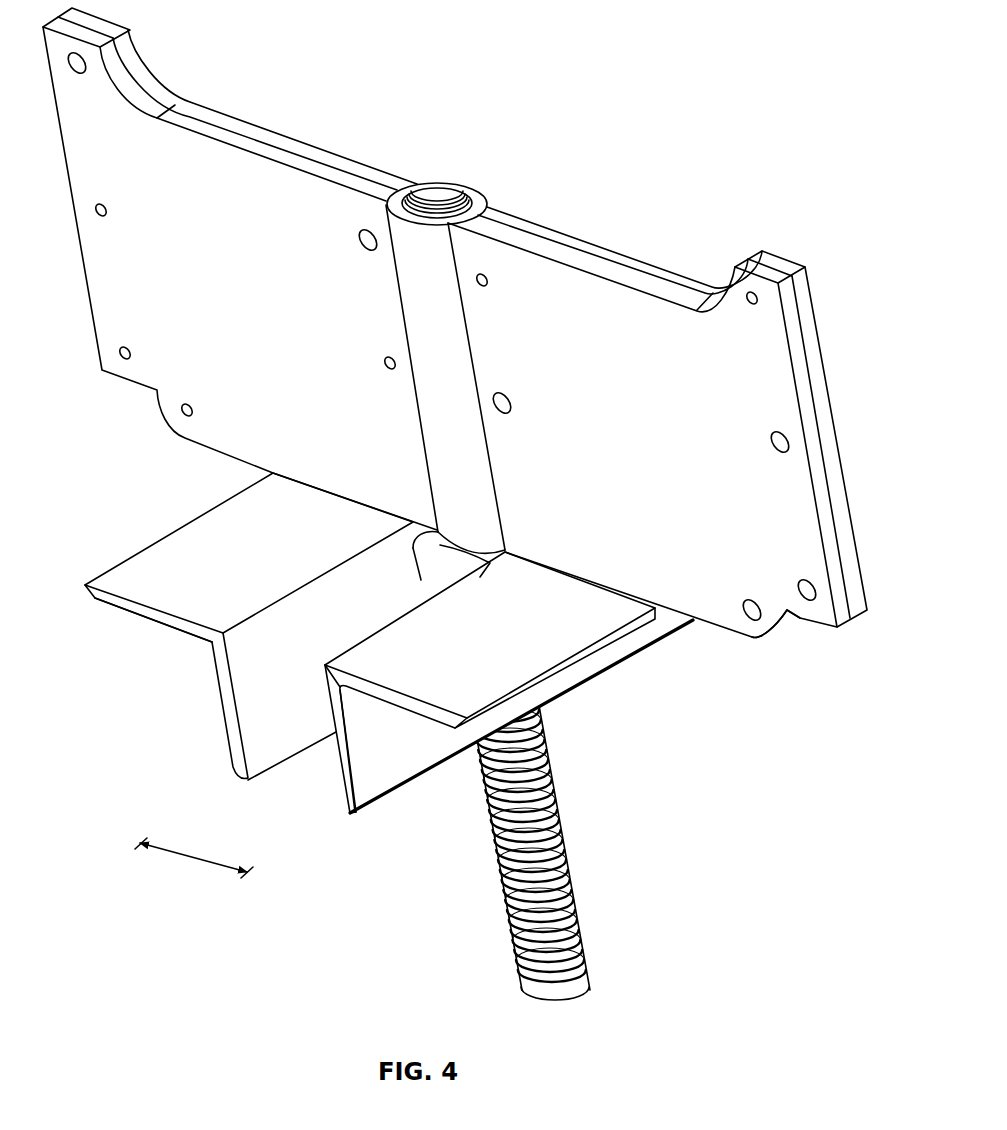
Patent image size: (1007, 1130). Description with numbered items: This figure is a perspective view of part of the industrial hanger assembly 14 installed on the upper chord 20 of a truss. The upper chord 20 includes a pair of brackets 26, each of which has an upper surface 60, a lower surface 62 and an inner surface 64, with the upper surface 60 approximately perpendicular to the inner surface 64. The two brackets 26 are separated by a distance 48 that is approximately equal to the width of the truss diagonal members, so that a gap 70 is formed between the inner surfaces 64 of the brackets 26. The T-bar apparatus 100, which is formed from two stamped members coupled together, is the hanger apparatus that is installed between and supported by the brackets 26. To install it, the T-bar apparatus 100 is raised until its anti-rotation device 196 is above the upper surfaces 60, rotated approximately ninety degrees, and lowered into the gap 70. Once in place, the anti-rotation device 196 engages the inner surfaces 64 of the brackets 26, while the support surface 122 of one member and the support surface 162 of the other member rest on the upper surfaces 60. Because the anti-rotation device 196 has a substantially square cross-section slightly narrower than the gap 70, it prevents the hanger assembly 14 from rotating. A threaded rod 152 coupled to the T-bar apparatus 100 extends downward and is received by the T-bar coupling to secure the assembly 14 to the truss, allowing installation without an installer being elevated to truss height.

The industrial hanger assembly 14 is at (704, 196).
The upper chord 20 is at (320, 900).
The brackets 26 is at (142, 618).
The distance 48 is at (192, 858).
The upper surface 60 is at (158, 550).
The lower surface 62 is at (245, 781).
The inner surface 64 is at (298, 689).
The gap 70 is at (291, 808).
The T-bar apparatus 100 is at (783, 357).
The support surface 122 is at (789, 614).
The threaded rod 152 is at (570, 847).
The support surface 162 is at (795, 623).
The anti-rotation device 196 is at (438, 573).